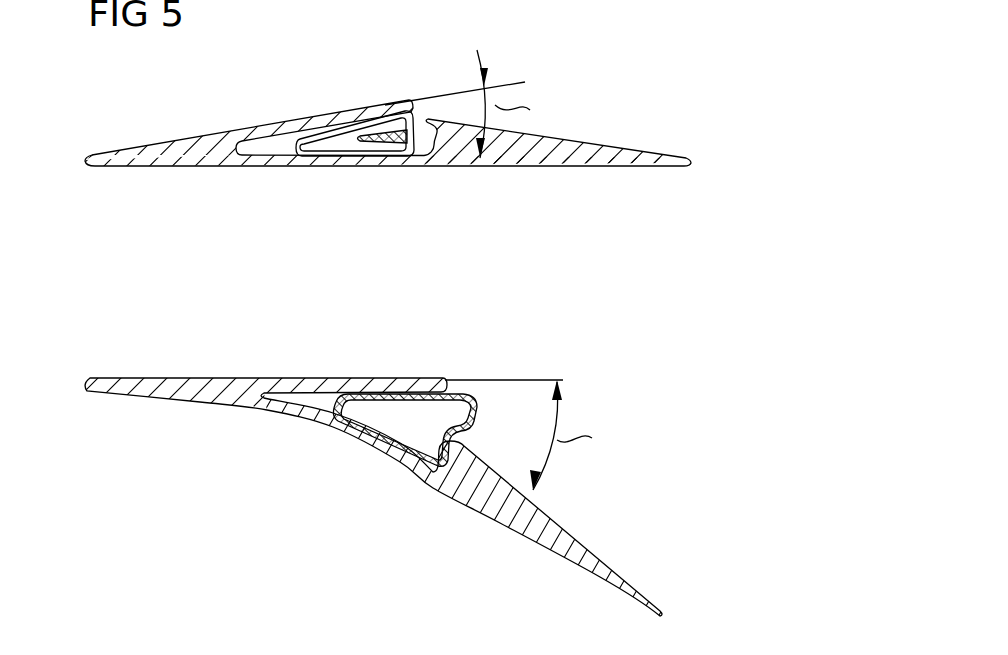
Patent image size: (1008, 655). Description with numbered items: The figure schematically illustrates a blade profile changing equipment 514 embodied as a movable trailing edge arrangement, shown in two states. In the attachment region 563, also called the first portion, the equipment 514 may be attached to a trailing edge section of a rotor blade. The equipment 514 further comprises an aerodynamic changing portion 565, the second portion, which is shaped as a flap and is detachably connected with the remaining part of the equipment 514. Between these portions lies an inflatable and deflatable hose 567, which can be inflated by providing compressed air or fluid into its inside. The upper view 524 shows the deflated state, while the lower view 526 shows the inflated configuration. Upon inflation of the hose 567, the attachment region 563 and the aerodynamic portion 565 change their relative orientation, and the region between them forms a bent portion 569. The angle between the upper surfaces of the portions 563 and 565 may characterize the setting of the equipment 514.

The blade profile changing equipment 514 is at (535, 168).
The view 524 is at (692, 68).
The view 526 is at (642, 346).
The attachment region 563 is at (203, 137).
The aerodynamic changing portion 565 is at (610, 156).
The inflatable and deflatable hose 567 is at (333, 132).
The bent portion 569 is at (350, 440).